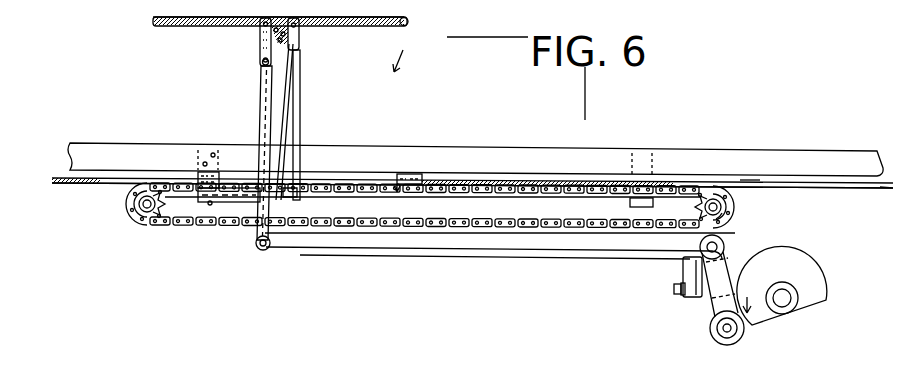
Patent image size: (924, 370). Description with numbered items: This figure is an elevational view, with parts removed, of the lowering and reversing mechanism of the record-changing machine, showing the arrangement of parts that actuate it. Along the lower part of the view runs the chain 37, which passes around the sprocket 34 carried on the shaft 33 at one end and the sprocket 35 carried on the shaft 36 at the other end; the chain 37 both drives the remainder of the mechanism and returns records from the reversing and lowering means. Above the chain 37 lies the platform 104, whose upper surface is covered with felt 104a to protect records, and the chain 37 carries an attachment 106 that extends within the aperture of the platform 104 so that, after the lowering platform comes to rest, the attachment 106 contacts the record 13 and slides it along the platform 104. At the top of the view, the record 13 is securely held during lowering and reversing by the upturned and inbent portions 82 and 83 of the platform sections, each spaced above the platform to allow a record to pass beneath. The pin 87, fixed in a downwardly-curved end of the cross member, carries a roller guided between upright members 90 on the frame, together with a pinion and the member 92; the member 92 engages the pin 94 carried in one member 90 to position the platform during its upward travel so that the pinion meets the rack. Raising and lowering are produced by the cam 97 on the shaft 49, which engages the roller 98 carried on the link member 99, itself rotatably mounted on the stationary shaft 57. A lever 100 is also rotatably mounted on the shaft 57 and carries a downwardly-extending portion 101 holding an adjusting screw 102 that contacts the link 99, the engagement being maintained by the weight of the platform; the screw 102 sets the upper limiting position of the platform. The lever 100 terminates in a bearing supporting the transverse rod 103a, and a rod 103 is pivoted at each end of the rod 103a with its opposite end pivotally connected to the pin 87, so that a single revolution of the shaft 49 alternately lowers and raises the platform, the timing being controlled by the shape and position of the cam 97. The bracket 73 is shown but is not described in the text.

The record 13 is at (154, 20).
The shaft 33 is at (140, 222).
The sprocket 34 is at (155, 226).
The sprocket 35 is at (722, 207).
The shaft 36 is at (724, 216).
The chain 37 is at (240, 226).
The shaft 49 is at (785, 298).
The stationary shaft 57 is at (725, 247).
The bracket 73 is at (260, 42).
The upturned and inbent portion 82 is at (284, 18).
The upturned and inbent portion 83 is at (408, 21).
The pin 87 is at (284, 38).
The upright member 90 is at (259, 108).
The member 92 is at (300, 37).
The pin 94 is at (262, 62).
The cam 97 is at (824, 285).
The roller 98 is at (740, 342).
The link member 99 is at (713, 292).
The lever 100 is at (485, 256).
The downwardly-extending portion 101 is at (688, 270).
The adjusting screw 102 is at (676, 294).
The rod 103 is at (275, 102).
The rod 103a is at (263, 252).
The platform 104 is at (864, 186).
The felt 104a is at (750, 180).
The attachment 106 is at (414, 173).